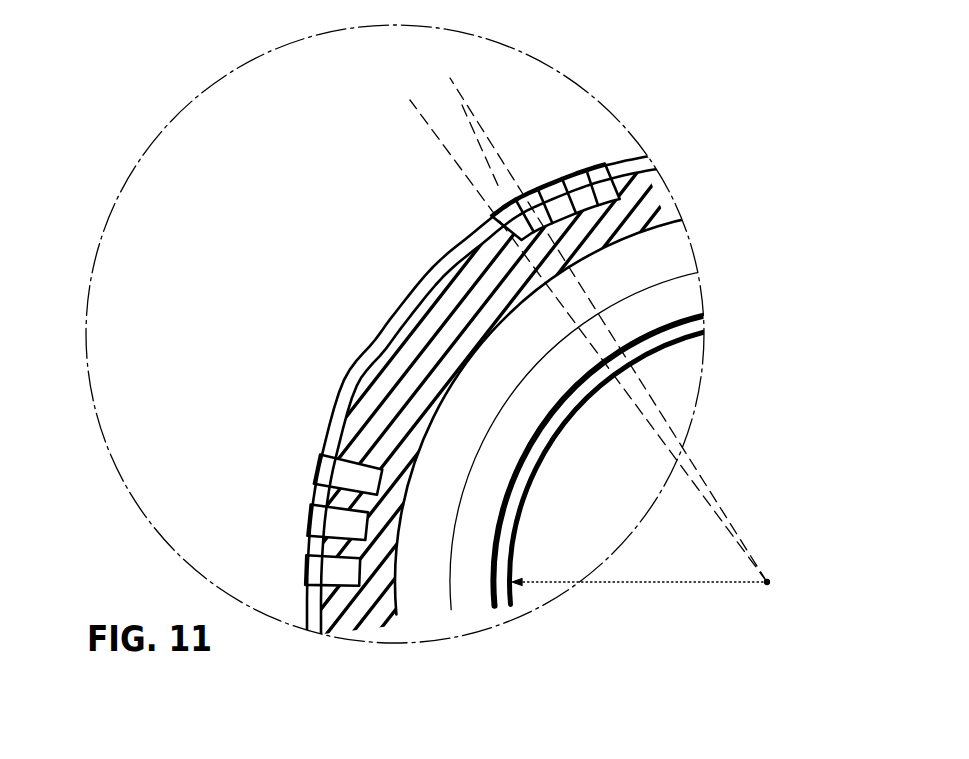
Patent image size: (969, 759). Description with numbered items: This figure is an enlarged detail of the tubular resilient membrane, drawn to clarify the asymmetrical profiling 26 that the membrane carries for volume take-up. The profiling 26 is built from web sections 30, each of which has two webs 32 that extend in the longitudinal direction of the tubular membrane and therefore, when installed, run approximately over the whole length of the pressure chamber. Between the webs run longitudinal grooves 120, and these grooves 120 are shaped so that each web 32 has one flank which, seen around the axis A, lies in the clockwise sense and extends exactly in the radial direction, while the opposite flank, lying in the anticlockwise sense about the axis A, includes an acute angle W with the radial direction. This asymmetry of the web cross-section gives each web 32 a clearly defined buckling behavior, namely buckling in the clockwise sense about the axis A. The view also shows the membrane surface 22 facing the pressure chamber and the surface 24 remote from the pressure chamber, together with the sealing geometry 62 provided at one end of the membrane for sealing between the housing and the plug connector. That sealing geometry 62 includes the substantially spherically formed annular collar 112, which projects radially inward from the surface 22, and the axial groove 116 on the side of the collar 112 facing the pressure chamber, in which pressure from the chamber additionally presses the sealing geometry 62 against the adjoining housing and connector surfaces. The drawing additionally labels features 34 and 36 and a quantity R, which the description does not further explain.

The profiling 26 is at (250, 497).
The web section 30 is at (566, 150).
The surface remote from the pressure chamber 24 is at (400, 316).
The surface facing the pressure chamber 22 is at (440, 412).
The axial groove 116 is at (692, 273).
The sealing geometry 62 is at (562, 434).
The annular collar 112 is at (655, 352).
The teeth 36 is at (292, 546).
The web 32 is at (541, 190).
The passages 34 is at (592, 242).
The groove 120 is at (505, 244).
The acute angle W is at (492, 93).
The axis A is at (768, 580).
The radius R is at (628, 583).